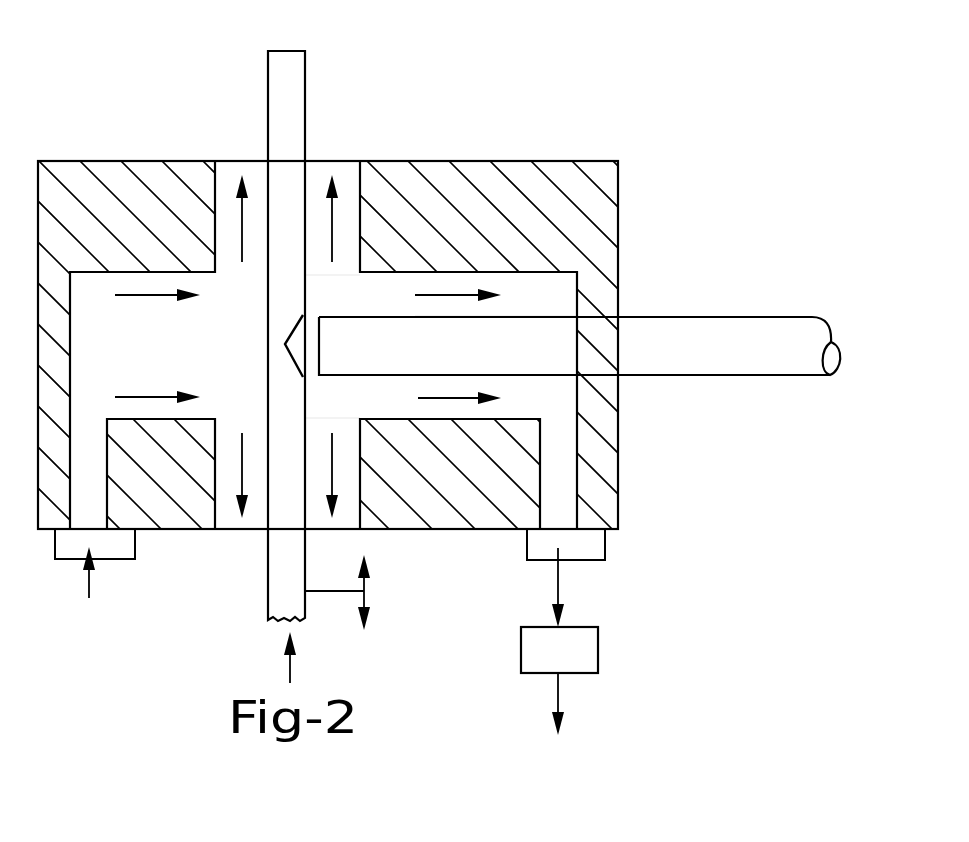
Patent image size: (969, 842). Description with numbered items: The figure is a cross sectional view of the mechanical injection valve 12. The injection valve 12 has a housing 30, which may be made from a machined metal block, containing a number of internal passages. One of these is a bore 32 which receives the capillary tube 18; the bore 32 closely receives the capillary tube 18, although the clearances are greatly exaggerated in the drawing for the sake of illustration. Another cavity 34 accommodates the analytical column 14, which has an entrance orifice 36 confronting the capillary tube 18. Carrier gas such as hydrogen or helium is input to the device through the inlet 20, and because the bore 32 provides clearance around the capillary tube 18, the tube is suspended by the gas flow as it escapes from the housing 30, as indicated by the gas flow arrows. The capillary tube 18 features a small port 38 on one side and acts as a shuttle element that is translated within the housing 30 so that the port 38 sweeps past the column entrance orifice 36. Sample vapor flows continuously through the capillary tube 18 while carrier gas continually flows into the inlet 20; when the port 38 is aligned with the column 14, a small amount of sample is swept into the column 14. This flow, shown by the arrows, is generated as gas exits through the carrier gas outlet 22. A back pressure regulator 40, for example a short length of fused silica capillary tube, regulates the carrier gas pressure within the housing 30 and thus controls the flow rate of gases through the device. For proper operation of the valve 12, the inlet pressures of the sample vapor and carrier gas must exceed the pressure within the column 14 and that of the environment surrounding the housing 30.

The injection valve 12 is at (484, 339).
The analytical column 14 is at (697, 376).
The capillary tube 18 is at (268, 100).
The inlet 20 is at (117, 560).
The carrier gas outlet 22 is at (605, 560).
The housing 30 is at (487, 161).
The bore 32 is at (215, 510).
The cavity 34 is at (545, 293).
The entrance orifice 36 is at (312, 353).
The port 38 is at (303, 315).
The back pressure regulator 40 is at (598, 650).